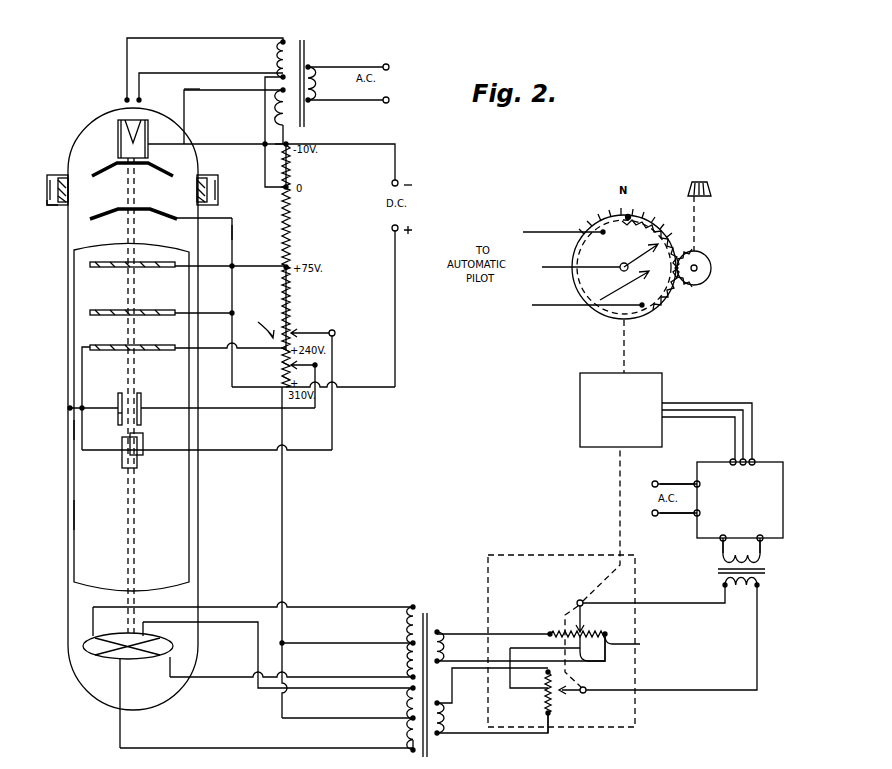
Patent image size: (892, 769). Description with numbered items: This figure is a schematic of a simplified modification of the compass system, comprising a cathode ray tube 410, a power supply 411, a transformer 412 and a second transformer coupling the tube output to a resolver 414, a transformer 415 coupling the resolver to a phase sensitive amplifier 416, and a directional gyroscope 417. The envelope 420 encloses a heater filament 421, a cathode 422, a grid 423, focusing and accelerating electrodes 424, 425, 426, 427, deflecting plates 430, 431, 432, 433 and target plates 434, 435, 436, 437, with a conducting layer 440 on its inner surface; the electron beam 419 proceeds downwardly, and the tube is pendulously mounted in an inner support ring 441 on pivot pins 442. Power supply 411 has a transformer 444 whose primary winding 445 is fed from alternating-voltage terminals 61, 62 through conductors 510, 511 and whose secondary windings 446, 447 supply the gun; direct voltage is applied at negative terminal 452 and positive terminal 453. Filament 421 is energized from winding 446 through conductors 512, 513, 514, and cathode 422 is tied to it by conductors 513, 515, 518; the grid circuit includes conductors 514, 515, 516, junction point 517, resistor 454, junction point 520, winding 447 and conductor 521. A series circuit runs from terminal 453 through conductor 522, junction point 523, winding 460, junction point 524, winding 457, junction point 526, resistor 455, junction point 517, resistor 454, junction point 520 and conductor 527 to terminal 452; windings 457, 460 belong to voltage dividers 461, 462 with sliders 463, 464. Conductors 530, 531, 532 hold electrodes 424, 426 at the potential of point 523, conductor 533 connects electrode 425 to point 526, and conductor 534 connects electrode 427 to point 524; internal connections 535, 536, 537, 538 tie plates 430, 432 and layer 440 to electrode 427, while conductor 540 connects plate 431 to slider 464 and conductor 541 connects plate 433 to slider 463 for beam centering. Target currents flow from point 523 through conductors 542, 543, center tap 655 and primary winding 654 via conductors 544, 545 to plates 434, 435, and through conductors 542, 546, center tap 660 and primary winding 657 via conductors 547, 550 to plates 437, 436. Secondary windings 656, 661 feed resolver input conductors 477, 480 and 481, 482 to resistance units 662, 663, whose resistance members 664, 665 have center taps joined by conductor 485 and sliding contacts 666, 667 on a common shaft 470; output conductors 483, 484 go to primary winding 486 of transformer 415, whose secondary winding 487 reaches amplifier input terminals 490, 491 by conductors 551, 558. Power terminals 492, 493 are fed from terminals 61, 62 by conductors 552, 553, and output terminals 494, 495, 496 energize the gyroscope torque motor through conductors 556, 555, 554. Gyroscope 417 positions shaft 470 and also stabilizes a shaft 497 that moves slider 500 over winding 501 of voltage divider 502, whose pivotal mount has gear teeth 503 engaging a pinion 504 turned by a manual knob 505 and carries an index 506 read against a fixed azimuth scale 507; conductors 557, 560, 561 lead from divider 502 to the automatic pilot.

The cathode ray tube 410 is at (67, 129).
The power supply 411 is at (272, 222).
The transformer 412 is at (428, 604).
The resolver 414 is at (590, 557).
The transformer 415 is at (771, 580).
The phase sensitive amplifier 416 is at (775, 472).
The directional gyroscope 417 is at (650, 382).
The electron beam 419 is at (128, 283).
The envelope 420 is at (74, 514).
The heater filament 421 is at (127, 116).
The cathode 422 is at (119, 130).
The control electrode 423 is at (100, 168).
The focusing and accelerating electrode 424 is at (92, 220).
The focusing and accelerating electrode 425 is at (90, 265).
The focusing and accelerating electrode 426 is at (90, 313).
The focusing and accelerating electrode 427 is at (90, 347).
The deflecting plate 430 is at (118, 413).
The deflecting plate 431 is at (141, 398).
The deflecting plate 432 is at (122, 445).
The deflecting plate 433 is at (143, 439).
The target plate 434 is at (88, 645).
The target plate 435 is at (168, 659).
The target plate 436 is at (120, 659).
The target plate 437 is at (121, 633).
The conducting layer 440 is at (74, 551).
The inner support ring 441 is at (212, 186).
The pivot pins 442 is at (58, 206).
The transformer 444 is at (316, 36).
The primary winding 445 is at (310, 67).
The secondary winding 446 is at (283, 44).
The secondary winding 447 is at (280, 100).
The input terminal 452 is at (400, 181).
The input terminal 453 is at (398, 232).
The fixed resistor 454 is at (291, 178).
The fixed resistor 455 is at (290, 230).
The winding 457 is at (290, 290).
The winding 460 is at (276, 373).
The voltage divider 461 is at (260, 320).
The voltage divider 462 is at (276, 386).
The slider 463 is at (294, 332).
The slider 464 is at (318, 365).
The common shaft 470 is at (576, 604).
The conductor 477 is at (520, 634).
The conductor 480 is at (470, 661).
The conductor 481 is at (470, 733).
The conductor 482 is at (470, 669).
The conductor 483 is at (670, 603).
The conductor 484 is at (690, 692).
The conductor 485 is at (583, 663).
The primary winding 486 is at (728, 590).
The secondary winding 487 is at (720, 558).
The input terminal 490 is at (724, 535).
The input terminal 491 is at (760, 535).
The power terminal 492 is at (698, 480).
The power terminal 493 is at (697, 518).
The output terminal 494 is at (733, 466).
The output terminal 495 is at (745, 459).
The output terminal 496 is at (754, 459).
The shaft 497 is at (620, 347).
The slider 500 is at (650, 258).
The winding 501 is at (664, 307).
The voltage divider 502 is at (617, 286).
The gear teeth 503 is at (683, 251).
The pinion 504 is at (711, 263).
The manual knob 505 is at (708, 188).
The index 506 is at (631, 215).
The fixed scale of azimuth 507 is at (605, 208).
The conductor 510 is at (350, 67).
The conductor 511 is at (350, 100).
The conductor 512 is at (184, 38).
The conductor 513 is at (190, 73).
The conductor 514 is at (265, 75).
The conductor 515 is at (265, 140).
The conductor 516 is at (265, 184).
The junction point 517 is at (292, 190).
The conductor 518 is at (200, 143).
The junction point 520 is at (285, 146).
The conductor 521 is at (205, 89).
The conductor 522 is at (396, 349).
The junction point 523 is at (283, 390).
The junction point 524 is at (282, 352).
The junction point 526 is at (291, 265).
The conductor 527 is at (396, 144).
The conductor 530 is at (236, 222).
The conductor 531 is at (232, 331).
The conductor 532 is at (228, 312).
The conductor 533 is at (268, 266).
The conductor 534 is at (222, 350).
The internal connection 535 is at (74, 428).
The internal connection 536 is at (118, 400).
The internal connection 537 is at (83, 363).
The internal connection 538 is at (70, 405).
The conductor 540 is at (232, 409).
The conductor 541 is at (210, 451).
The conductor 542 is at (284, 535).
The conductor 543 is at (312, 643).
The conductor 544 is at (323, 606).
The conductor 545 is at (320, 677).
The conductor 546 is at (318, 719).
The conductor 547 is at (318, 689).
The conductor 550 is at (213, 748).
The conductor 551 is at (722, 553).
The conductor 552 is at (675, 484).
The conductor 553 is at (678, 516).
The conductor 554 is at (678, 402).
The conductor 555 is at (692, 409).
The conductor 556 is at (705, 416).
The conductor 557 is at (548, 232).
The conductor 558 is at (765, 549).
The conductor 560 is at (555, 267).
The conductor 561 is at (556, 306).
The input terminal 61 is at (389, 67).
The input terminal 62 is at (389, 100).
The primary winding 654 is at (412, 612).
The center tap 655 is at (412, 645).
The secondary winding 656 is at (440, 632).
The primary winding 657 is at (412, 749).
The center tap 660 is at (411, 722).
The secondary winding 661 is at (440, 733).
The resistance unit 662 is at (600, 630).
The resistance unit 663 is at (566, 710).
The resistance member 664 is at (637, 645).
The resistance member 665 is at (551, 715).
The sliding contact 666 is at (583, 622).
The sliding contact 667 is at (572, 694).